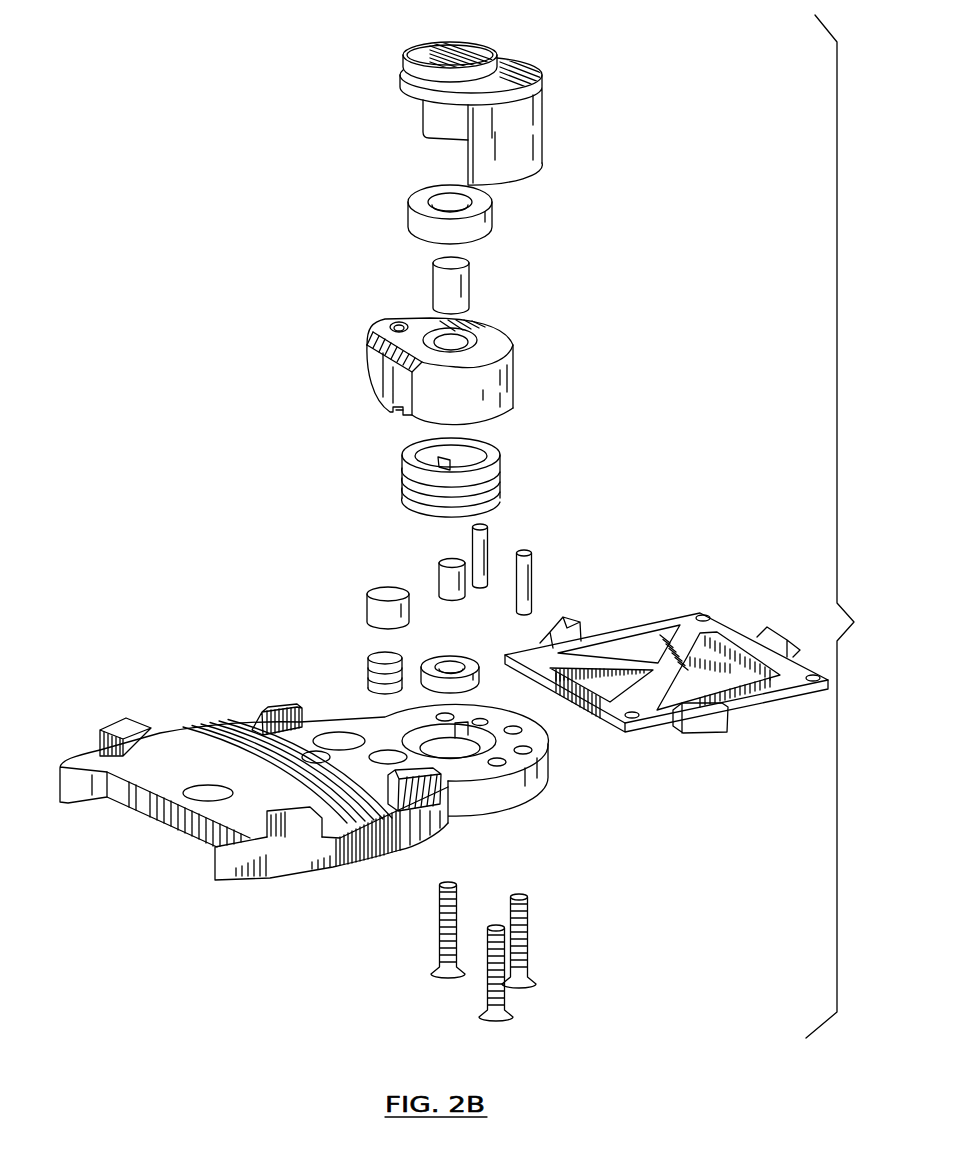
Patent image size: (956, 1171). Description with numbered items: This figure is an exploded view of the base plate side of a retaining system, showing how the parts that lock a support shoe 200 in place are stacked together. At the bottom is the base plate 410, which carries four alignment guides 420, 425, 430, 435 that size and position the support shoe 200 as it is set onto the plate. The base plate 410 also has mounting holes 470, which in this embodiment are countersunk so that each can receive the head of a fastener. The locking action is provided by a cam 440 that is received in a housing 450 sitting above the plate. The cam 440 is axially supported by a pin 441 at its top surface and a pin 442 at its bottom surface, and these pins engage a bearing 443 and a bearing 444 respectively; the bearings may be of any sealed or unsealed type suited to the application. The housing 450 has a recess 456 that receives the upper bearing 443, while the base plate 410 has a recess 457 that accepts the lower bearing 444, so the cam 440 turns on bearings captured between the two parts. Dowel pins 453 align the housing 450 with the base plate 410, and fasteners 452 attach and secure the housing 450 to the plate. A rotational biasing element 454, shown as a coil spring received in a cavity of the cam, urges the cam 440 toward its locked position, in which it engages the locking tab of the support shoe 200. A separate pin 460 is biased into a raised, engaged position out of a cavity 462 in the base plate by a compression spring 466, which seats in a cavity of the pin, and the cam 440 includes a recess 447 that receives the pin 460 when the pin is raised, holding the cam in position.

The support shoe 200 is at (755, 702).
The base plate 410 is at (202, 852).
The alignment guide 420 is at (268, 708).
The alignment guide 425 is at (392, 795).
The alignment guide 430 is at (126, 724).
The alignment guide 435 is at (300, 835).
The cam 440 is at (365, 359).
The pin 441 is at (430, 287).
The pin 442 is at (438, 577).
The bearing 443 is at (408, 212).
The bearing 444 is at (482, 682).
The recess 447 is at (394, 416).
The housing 450 is at (540, 120).
The fasteners 452 is at (528, 948).
The dowel pins 453 is at (532, 587).
The rotational biasing element 454 is at (500, 467).
The recess 456 is at (404, 69).
The recess 457 is at (457, 753).
The pin 460 is at (363, 602).
The cavity 462 is at (383, 752).
The compression spring 466 is at (371, 660).
The mounting holes 470 is at (327, 740).